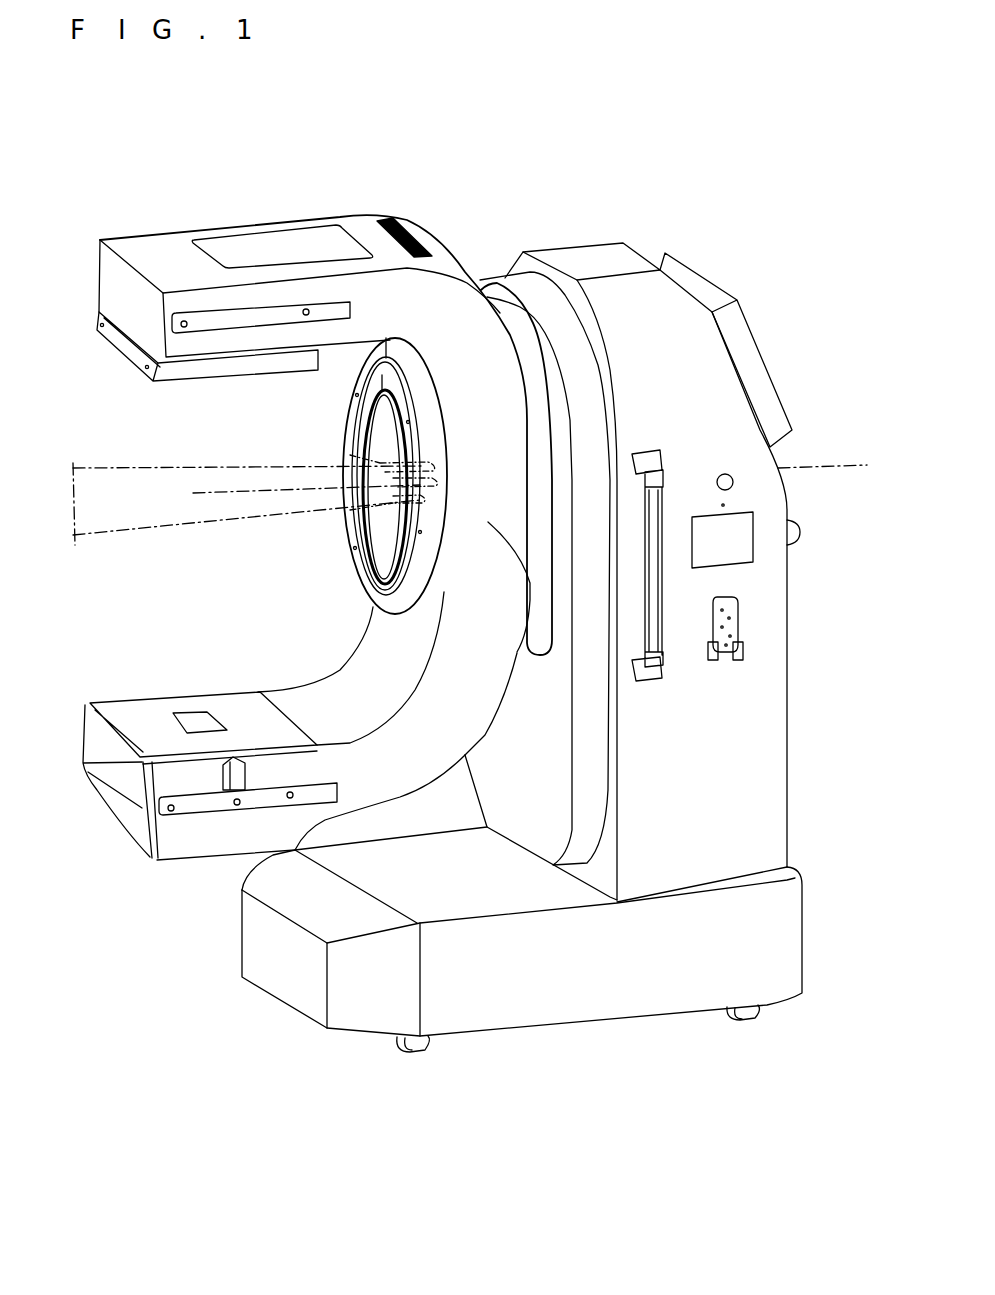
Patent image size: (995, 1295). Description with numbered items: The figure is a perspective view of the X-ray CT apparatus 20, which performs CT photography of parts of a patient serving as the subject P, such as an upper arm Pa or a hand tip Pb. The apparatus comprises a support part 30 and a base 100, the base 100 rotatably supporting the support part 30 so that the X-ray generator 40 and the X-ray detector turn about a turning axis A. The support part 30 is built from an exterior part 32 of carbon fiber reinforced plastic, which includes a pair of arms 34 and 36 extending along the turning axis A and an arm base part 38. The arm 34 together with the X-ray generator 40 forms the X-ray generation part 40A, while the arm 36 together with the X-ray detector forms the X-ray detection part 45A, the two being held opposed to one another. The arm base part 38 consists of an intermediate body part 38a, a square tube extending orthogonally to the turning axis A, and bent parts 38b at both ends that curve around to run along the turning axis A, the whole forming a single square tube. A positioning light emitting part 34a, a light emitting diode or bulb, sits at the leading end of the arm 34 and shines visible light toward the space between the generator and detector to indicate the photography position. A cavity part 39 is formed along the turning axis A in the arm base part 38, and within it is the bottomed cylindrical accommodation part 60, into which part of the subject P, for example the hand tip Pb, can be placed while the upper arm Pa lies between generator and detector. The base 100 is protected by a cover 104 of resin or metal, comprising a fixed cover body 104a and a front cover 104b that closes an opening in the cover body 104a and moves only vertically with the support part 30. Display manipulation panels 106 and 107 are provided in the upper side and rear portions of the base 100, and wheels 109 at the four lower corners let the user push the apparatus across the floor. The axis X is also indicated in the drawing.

The X-ray CT apparatus 20 is at (378, 506).
The support part 30 is at (270, 268).
The exterior part 32 is at (157, 235).
The arm 34 is at (192, 860).
The positioning light emitting part 34a is at (245, 773).
The arm 36 is at (107, 276).
The arm base part 38 is at (378, 550).
The intermediate body part 38a is at (528, 657).
The bent part 38b is at (458, 262).
The cavity part 39 is at (362, 540).
The X-ray generator 40 is at (210, 793).
The X-ray generation part 40A is at (225, 863).
The X-ray detection part 45A is at (177, 250).
The accommodation part 60 is at (373, 557).
The base 100 is at (549, 647).
The cover 104 is at (668, 537).
The cover body 104a is at (772, 712).
The front cover 104b is at (523, 283).
The display manipulation panel 106 is at (735, 550).
The display manipulation panel 107 is at (757, 345).
The wheels 109 is at (412, 1055).
The subject P is at (93, 468).
The upper arm Pa is at (177, 468).
The hand tip Pb is at (390, 460).
The imaging axis X is at (213, 495).
The turning axis A is at (823, 467).